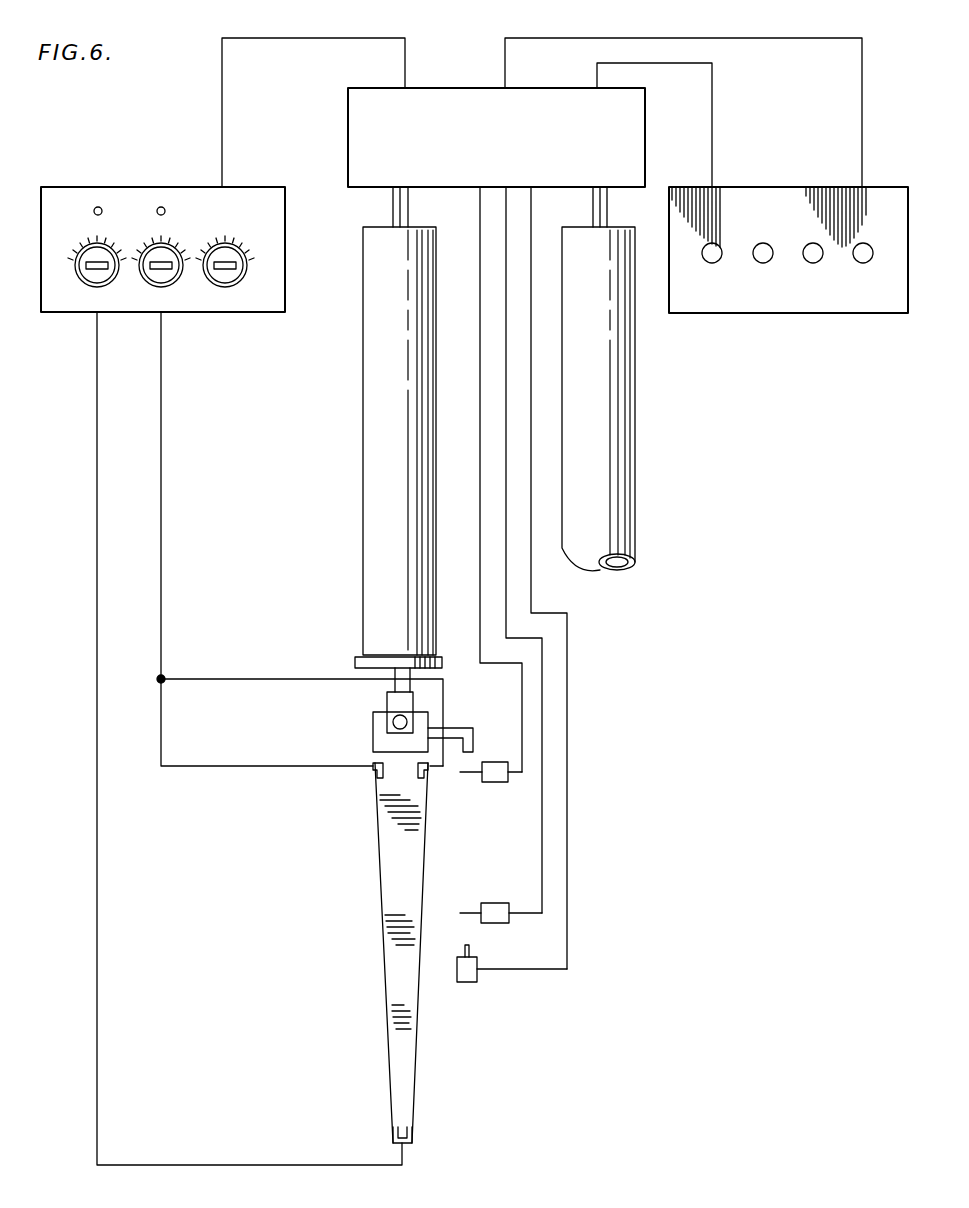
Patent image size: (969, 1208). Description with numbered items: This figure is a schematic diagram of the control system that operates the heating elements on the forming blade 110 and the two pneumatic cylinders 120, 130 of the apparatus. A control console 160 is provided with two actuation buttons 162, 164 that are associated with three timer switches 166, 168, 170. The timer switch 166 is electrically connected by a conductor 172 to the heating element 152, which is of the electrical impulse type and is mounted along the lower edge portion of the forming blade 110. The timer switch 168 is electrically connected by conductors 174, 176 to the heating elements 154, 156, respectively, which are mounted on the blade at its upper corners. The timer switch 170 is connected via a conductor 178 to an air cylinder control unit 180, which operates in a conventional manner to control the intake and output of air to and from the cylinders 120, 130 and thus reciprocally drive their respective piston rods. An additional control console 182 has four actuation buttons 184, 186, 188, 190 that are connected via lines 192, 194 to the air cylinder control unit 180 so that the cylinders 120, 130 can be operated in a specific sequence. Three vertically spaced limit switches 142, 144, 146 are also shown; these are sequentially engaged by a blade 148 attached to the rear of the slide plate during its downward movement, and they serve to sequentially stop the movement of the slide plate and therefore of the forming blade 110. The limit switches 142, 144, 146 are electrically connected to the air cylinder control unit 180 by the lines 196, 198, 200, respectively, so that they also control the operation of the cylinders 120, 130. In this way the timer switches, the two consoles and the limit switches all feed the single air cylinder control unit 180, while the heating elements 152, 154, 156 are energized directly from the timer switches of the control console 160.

The forming blade 110 is at (401, 953).
The pneumatic cylinder 120 is at (398, 439).
The pneumatic cylinder 130 is at (598, 379).
The limit switch 142 is at (497, 768).
The limit switch 144 is at (515, 876).
The limit switch 146 is at (470, 982).
The blade 148 is at (456, 725).
The heating element 152 is at (395, 1133).
The heating element 154 is at (375, 770).
The heating element 156 is at (430, 775).
The control console 160 is at (67, 187).
The actuation button 162 is at (100, 207).
The actuation button 164 is at (163, 207).
The timer switch 166 is at (95, 285).
The timer switch 168 is at (163, 287).
The timer switch 170 is at (222, 287).
The conductor 172 is at (97, 720).
The conductor 174 is at (160, 766).
The conductor 176 is at (292, 679).
The conductor 178 is at (308, 38).
The air cylinder control unit 180 is at (348, 133).
The control console 182 is at (780, 297).
The actuation button 184 is at (710, 263).
The actuation button 186 is at (765, 264).
The actuation button 188 is at (812, 264).
The actuation button 190 is at (863, 263).
The line 192 is at (712, 152).
The line 194 is at (862, 105).
The line 196 is at (480, 552).
The line 198 is at (505, 500).
The line 200 is at (532, 517).